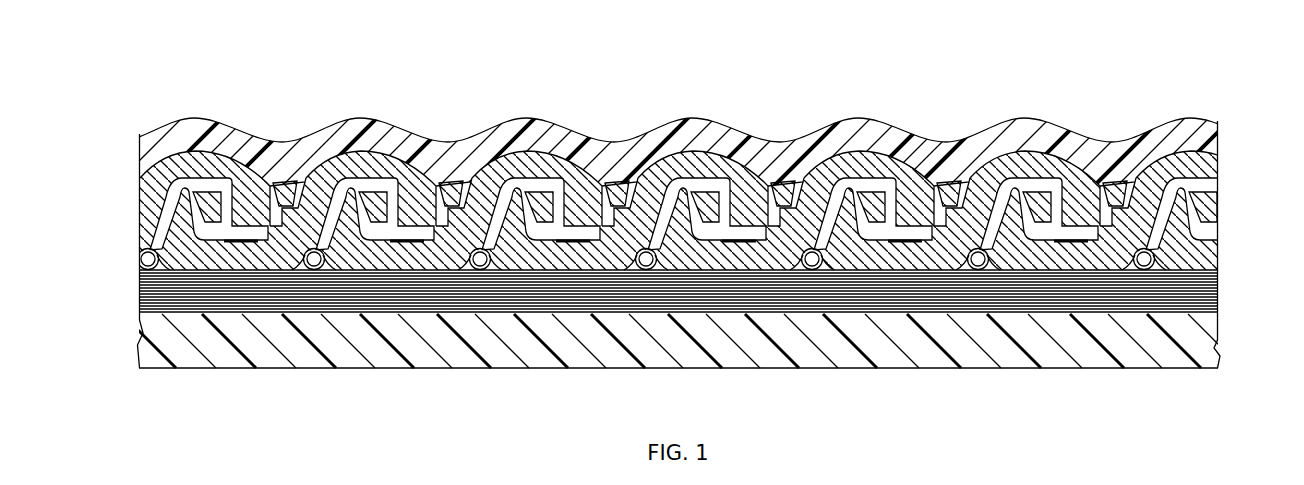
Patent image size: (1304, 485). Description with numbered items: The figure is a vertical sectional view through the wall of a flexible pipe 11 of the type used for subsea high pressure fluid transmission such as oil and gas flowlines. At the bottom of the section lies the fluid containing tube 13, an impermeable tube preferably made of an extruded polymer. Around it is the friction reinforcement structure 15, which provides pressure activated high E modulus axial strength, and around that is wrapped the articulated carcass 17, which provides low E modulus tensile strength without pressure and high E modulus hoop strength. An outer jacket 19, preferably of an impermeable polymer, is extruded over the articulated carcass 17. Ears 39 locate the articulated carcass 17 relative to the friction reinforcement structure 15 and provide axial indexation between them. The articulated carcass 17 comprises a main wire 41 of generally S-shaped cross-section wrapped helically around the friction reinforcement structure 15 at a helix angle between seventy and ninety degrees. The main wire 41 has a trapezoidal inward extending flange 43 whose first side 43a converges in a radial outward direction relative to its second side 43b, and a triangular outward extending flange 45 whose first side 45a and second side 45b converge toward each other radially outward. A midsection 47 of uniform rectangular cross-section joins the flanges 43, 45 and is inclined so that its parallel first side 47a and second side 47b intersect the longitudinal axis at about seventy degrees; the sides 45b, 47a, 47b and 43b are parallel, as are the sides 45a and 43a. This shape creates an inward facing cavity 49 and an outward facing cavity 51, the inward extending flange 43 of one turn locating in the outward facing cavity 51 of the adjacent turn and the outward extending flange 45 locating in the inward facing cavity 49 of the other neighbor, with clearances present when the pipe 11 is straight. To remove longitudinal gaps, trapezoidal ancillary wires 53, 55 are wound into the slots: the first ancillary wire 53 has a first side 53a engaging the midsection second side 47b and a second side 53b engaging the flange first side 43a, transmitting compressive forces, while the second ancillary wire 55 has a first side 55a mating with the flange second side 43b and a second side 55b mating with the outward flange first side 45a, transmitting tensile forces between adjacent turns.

The pipe 11 is at (703, 247).
The fluid containing tube 13 is at (1078, 357).
The friction reinforcement structure 15 is at (978, 322).
The articulated carcass 17 is at (908, 152).
The outer jacket 19 is at (377, 116).
The ears 39 is at (809, 262).
The main wire 41 is at (737, 210).
The inward extending flange 43 is at (780, 185).
The first side 43a is at (946, 185).
The second side 43b is at (860, 205).
The outward extending flange 45 is at (507, 207).
The first side 45a is at (1050, 215).
The second side 45b is at (968, 190).
The midsection 47 is at (686, 156).
The first side 47a is at (327, 193).
The second side 47b is at (257, 200).
The inward facing cavity 49 is at (713, 203).
The outward facing cavity 51 is at (615, 195).
The first ancillary wire 53 is at (632, 222).
The first side 53a is at (1155, 190).
The second side 53b is at (1086, 186).
The second ancillary wire 55 is at (570, 238).
The first side 55a is at (403, 178).
The second side 55b is at (345, 196).